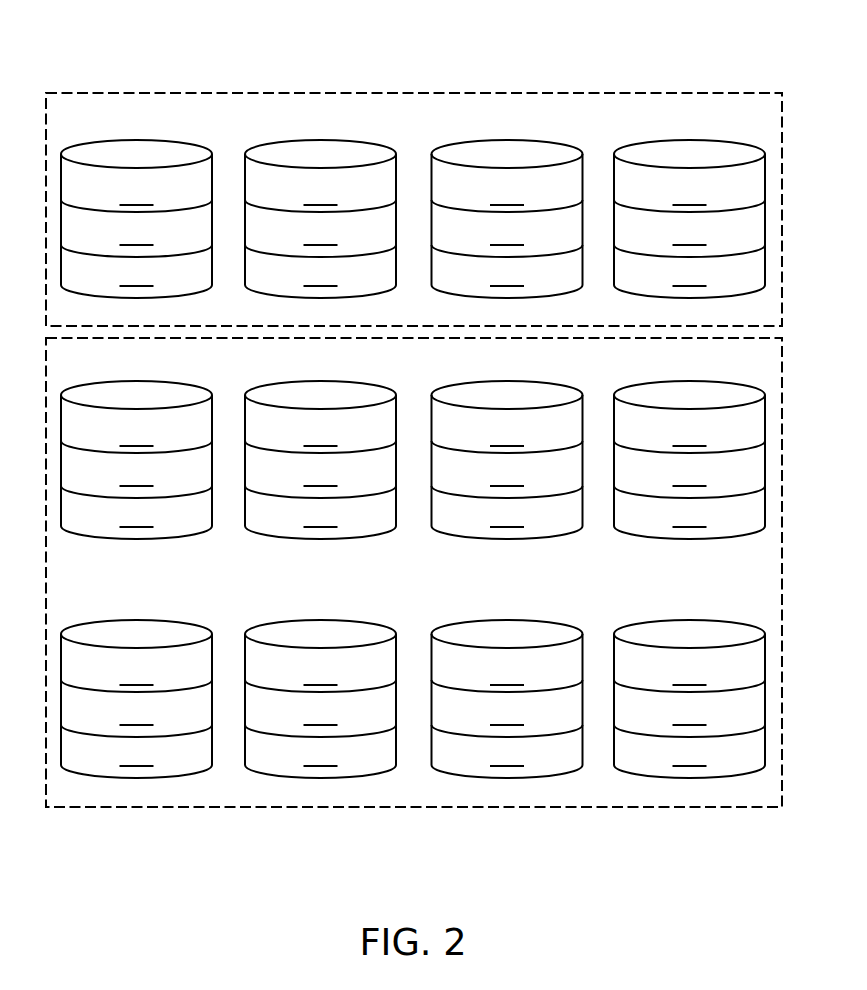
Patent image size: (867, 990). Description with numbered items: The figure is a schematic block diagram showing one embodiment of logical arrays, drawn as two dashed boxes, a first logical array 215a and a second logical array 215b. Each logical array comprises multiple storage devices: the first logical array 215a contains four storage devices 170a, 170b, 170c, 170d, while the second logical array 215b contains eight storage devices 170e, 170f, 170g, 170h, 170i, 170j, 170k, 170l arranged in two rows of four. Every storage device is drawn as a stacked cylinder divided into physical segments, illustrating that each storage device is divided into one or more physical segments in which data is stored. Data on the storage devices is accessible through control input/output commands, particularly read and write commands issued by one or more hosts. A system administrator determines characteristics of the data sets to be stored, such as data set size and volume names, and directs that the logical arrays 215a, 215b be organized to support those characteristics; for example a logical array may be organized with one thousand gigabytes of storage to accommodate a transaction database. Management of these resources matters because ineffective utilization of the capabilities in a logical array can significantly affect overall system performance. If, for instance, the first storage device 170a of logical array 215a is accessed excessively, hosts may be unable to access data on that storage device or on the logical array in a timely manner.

The first storage device 170a is at (136, 200).
The storage device 170b is at (320, 200).
The storage device 170c is at (507, 200).
The storage device 170d is at (689, 200).
The storage device 170e is at (136, 441).
The storage device 170f is at (320, 441).
The storage device 170g is at (507, 441).
The storage device 170h is at (689, 441).
The storage device 170i is at (136, 680).
The storage device 170j is at (320, 680).
The storage device 170k is at (507, 680).
The storage device 170l is at (689, 680).
The logical array 215a is at (463, 92).
The logical array 215b is at (390, 807).